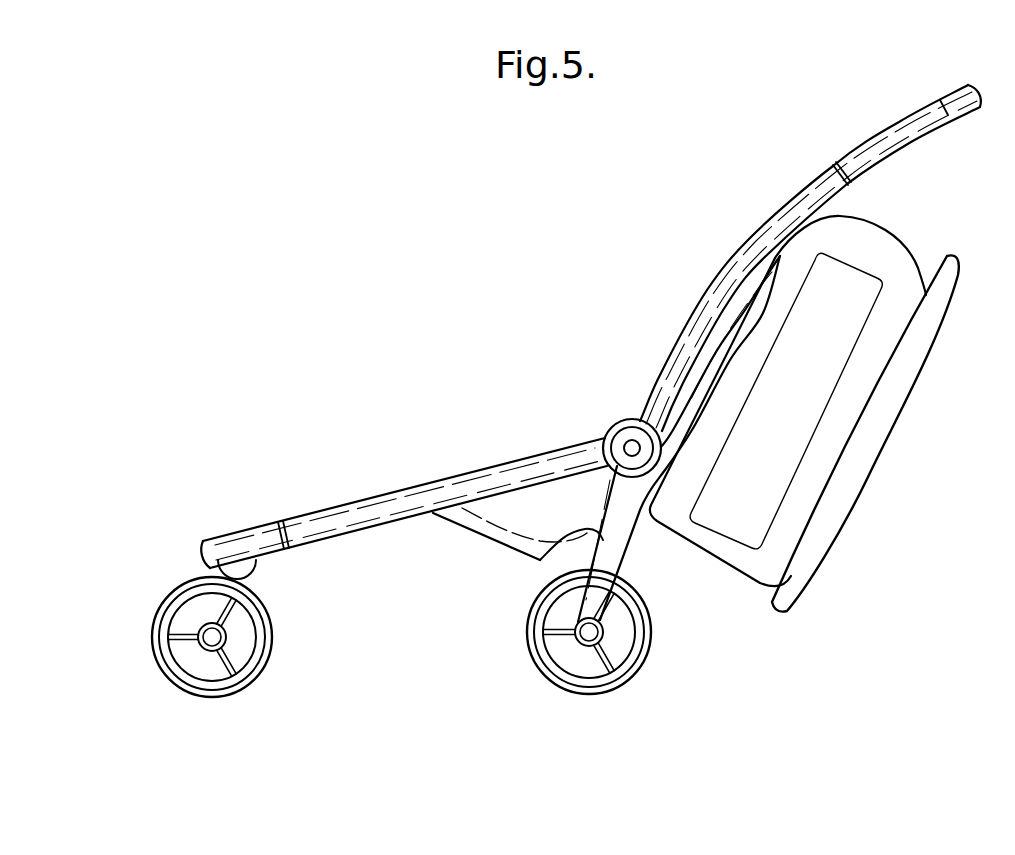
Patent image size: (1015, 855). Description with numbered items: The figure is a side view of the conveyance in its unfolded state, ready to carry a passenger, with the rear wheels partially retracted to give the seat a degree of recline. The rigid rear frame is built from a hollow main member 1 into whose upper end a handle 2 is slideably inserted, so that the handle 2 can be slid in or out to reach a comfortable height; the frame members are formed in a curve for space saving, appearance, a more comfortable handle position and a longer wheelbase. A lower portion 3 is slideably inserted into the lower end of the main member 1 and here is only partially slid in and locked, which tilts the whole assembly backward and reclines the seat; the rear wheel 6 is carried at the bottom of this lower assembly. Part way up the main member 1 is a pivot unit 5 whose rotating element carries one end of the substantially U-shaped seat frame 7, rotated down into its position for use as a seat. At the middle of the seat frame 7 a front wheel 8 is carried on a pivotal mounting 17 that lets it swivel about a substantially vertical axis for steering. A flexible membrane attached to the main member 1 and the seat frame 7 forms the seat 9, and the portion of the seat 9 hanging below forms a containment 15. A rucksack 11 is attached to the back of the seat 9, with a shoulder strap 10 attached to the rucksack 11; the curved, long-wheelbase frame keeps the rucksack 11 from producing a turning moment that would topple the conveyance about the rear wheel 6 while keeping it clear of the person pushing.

The main member 1 is at (777, 212).
The handle 2 is at (967, 83).
The lower portion 3 is at (580, 530).
The pivot unit 5 is at (632, 448).
The rear wheel 6 is at (610, 687).
The seat frame 7 is at (248, 528).
The wheel 8 is at (223, 697).
The seat 9 is at (517, 537).
The shoulder strap 10 is at (853, 483).
The rucksack 11 is at (862, 247).
The containment 15 is at (575, 517).
The pivotal mounting 17 is at (252, 582).